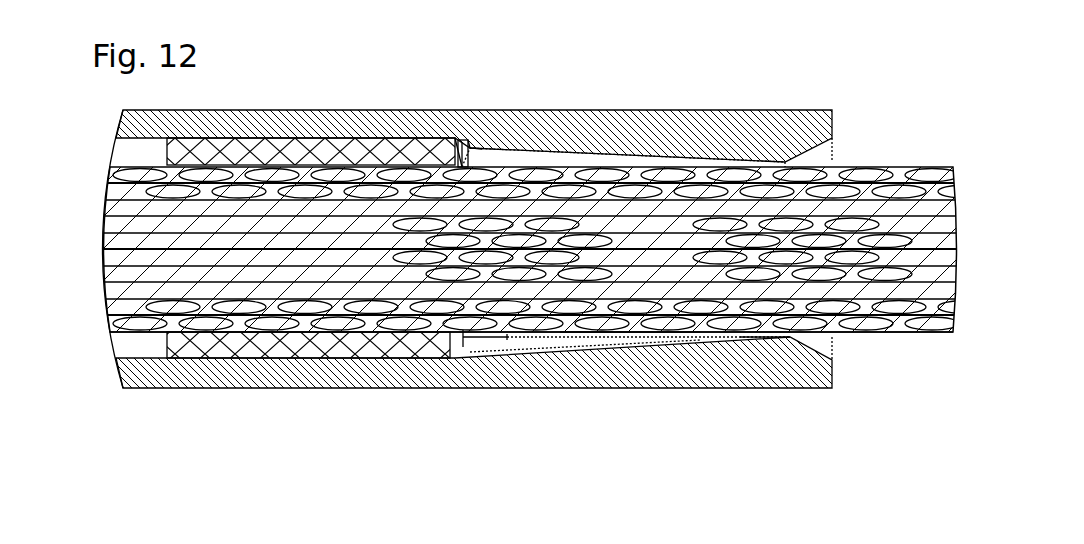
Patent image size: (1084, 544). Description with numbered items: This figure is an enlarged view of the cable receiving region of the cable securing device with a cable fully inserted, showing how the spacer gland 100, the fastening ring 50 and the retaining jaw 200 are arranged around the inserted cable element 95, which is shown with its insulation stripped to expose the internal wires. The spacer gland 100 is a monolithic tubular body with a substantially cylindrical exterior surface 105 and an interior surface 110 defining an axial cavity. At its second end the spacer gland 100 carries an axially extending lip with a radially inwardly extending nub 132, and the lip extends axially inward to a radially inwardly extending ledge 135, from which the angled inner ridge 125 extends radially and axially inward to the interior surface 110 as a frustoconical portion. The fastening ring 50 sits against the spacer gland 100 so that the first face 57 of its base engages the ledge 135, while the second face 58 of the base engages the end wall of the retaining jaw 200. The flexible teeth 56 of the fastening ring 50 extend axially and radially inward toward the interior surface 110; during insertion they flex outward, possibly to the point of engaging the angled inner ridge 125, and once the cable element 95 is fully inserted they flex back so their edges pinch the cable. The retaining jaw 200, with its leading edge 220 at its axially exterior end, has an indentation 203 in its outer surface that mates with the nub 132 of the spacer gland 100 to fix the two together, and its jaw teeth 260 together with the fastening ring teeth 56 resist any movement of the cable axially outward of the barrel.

The fastening ring 50 is at (462, 143).
The teeth 56 is at (451, 165).
The first face 57 is at (462, 150).
The second face 58 is at (481, 147).
The cable element 95 is at (697, 315).
The spacer gland 100 is at (187, 157).
The exterior surface 105 is at (223, 358).
The interior surface 110 is at (273, 337).
The angled inner ridge 125 is at (448, 342).
The nub 132 is at (496, 151).
The radially inwardly extending ledge 135 is at (460, 350).
The retaining jaw 200 is at (548, 343).
The indentation 203 is at (485, 350).
The leading edge 220 is at (756, 339).
The jaw teeth 260 is at (613, 330).